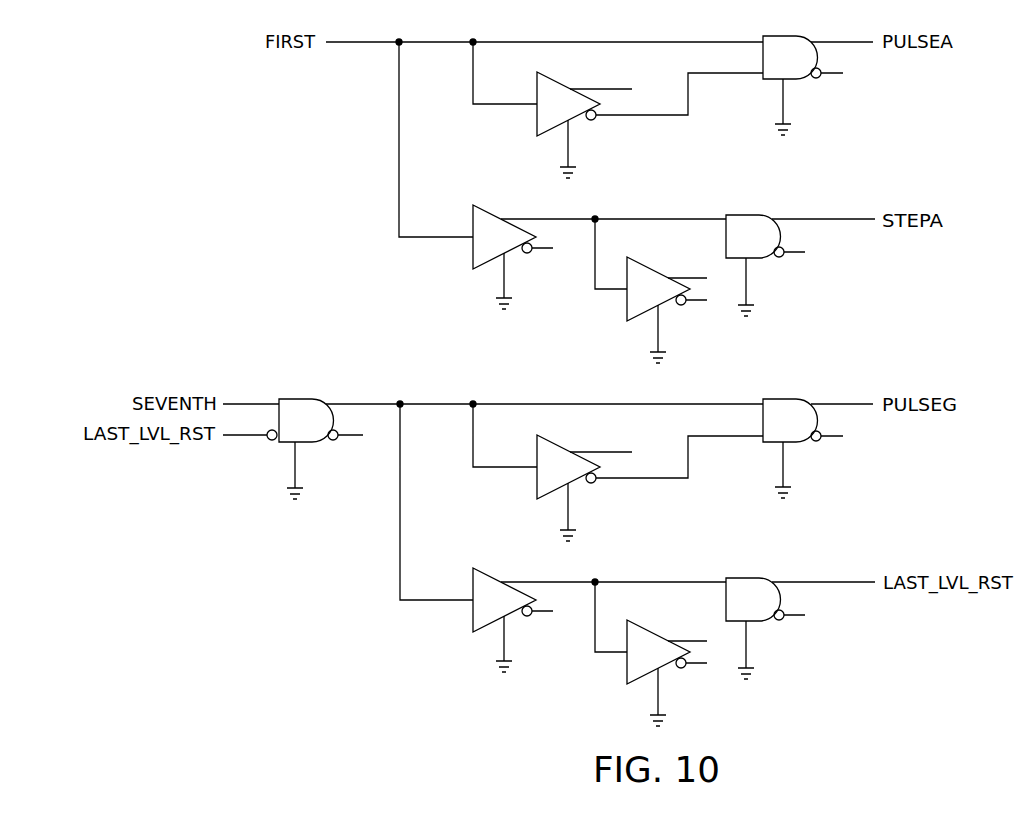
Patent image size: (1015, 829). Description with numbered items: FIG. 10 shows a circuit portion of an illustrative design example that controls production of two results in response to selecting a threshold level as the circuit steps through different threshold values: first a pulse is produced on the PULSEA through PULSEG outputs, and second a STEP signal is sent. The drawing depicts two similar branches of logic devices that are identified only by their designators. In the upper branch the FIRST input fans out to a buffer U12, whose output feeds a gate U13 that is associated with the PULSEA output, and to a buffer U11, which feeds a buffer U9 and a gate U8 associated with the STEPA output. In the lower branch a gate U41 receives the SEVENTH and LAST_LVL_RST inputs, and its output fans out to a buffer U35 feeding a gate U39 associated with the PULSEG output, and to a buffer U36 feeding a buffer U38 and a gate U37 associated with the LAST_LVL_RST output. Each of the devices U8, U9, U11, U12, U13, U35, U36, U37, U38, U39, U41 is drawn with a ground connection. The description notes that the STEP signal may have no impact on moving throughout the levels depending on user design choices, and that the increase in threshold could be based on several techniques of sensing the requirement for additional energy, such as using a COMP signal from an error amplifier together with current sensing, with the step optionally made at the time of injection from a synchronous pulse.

The AND gate U8 is at (765, 252).
The buffer U9 is at (667, 303).
The buffer U11 is at (513, 249).
The buffer U12 is at (584, 118).
The AND gate U13 is at (803, 73).
The buffer U35 is at (584, 481).
The buffer U36 is at (513, 612).
The AND gate U37 is at (765, 615).
The buffer U38 is at (667, 666).
The AND gate U39 is at (803, 436).
The AND gate U41 is at (315, 437).